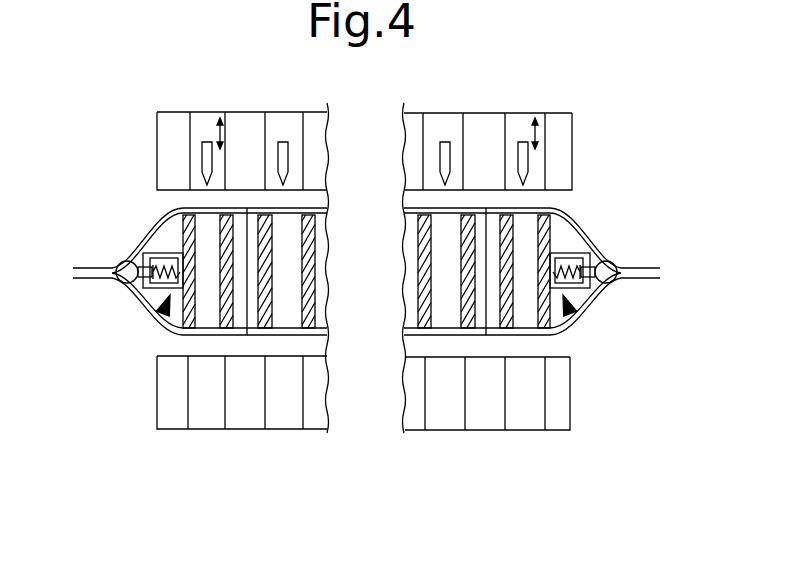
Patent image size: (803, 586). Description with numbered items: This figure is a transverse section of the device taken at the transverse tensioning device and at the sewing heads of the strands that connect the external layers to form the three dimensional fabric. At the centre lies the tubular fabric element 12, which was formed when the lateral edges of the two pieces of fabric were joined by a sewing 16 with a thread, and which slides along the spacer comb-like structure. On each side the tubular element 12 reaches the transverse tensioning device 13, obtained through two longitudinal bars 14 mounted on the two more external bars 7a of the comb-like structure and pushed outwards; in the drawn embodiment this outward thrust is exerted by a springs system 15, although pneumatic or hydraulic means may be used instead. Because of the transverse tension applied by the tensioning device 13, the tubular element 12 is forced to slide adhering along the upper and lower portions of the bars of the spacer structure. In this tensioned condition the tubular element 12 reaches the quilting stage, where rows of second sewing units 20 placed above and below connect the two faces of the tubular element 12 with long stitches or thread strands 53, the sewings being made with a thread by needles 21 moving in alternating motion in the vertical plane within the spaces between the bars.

The external bar 7a is at (186, 236).
The tubular fabric element 12 is at (480, 242).
The transverse tensioning device 13 is at (162, 313).
The longitudinal bar 14 is at (123, 266).
The springs system 15 is at (157, 288).
The sewing 16 is at (82, 283).
The second sewing unit 20 is at (246, 133).
The needle 21 is at (287, 156).
The thread strand 53 is at (548, 215).